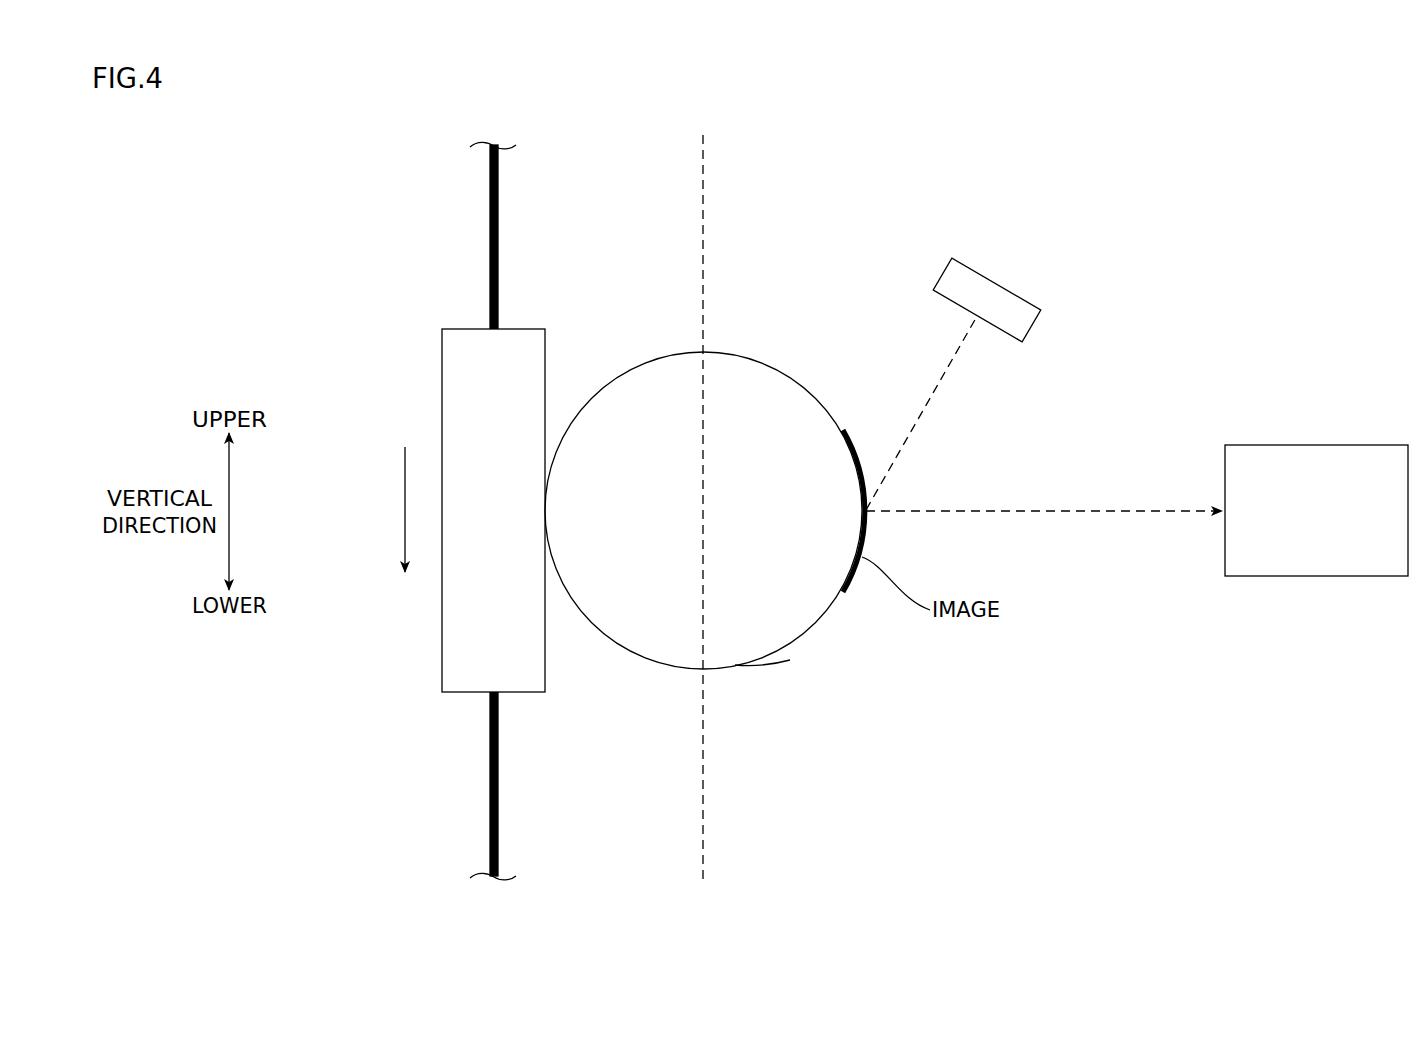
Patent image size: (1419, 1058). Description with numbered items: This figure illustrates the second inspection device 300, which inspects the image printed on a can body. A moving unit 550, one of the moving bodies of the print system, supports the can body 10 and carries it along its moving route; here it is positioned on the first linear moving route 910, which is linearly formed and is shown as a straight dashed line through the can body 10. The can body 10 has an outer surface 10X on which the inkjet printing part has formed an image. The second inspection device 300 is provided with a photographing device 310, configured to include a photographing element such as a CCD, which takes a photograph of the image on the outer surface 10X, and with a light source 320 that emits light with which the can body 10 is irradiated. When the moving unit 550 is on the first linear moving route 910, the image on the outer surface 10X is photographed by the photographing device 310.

The second inspection device 300 is at (1290, 204).
The photographing device 310 is at (1311, 576).
The light source 320 is at (1033, 330).
The can body 10 is at (822, 640).
The outer surface 10X is at (761, 660).
The moving unit 550 is at (418, 657).
The first linear moving route 910 is at (787, 508).